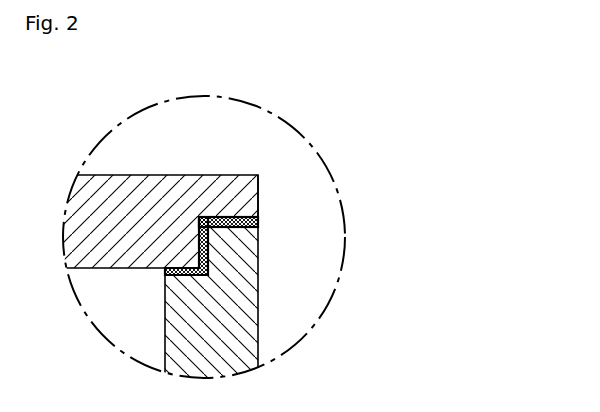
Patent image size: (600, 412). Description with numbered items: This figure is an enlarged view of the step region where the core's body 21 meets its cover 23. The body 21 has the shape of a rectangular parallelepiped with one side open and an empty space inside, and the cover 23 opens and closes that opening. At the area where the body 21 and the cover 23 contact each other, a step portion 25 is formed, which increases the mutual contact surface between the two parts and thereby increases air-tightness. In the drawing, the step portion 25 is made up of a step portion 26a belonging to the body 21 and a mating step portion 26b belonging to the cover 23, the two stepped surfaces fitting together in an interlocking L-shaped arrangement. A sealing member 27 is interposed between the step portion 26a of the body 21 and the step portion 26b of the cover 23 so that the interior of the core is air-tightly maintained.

The body 21 is at (138, 173).
The cover 23 is at (237, 325).
The step portion 25 is at (306, 245).
The step portion of the body 26a is at (258, 222).
The step portion of the cover 26b is at (208, 254).
The sealing member 27 is at (207, 238).